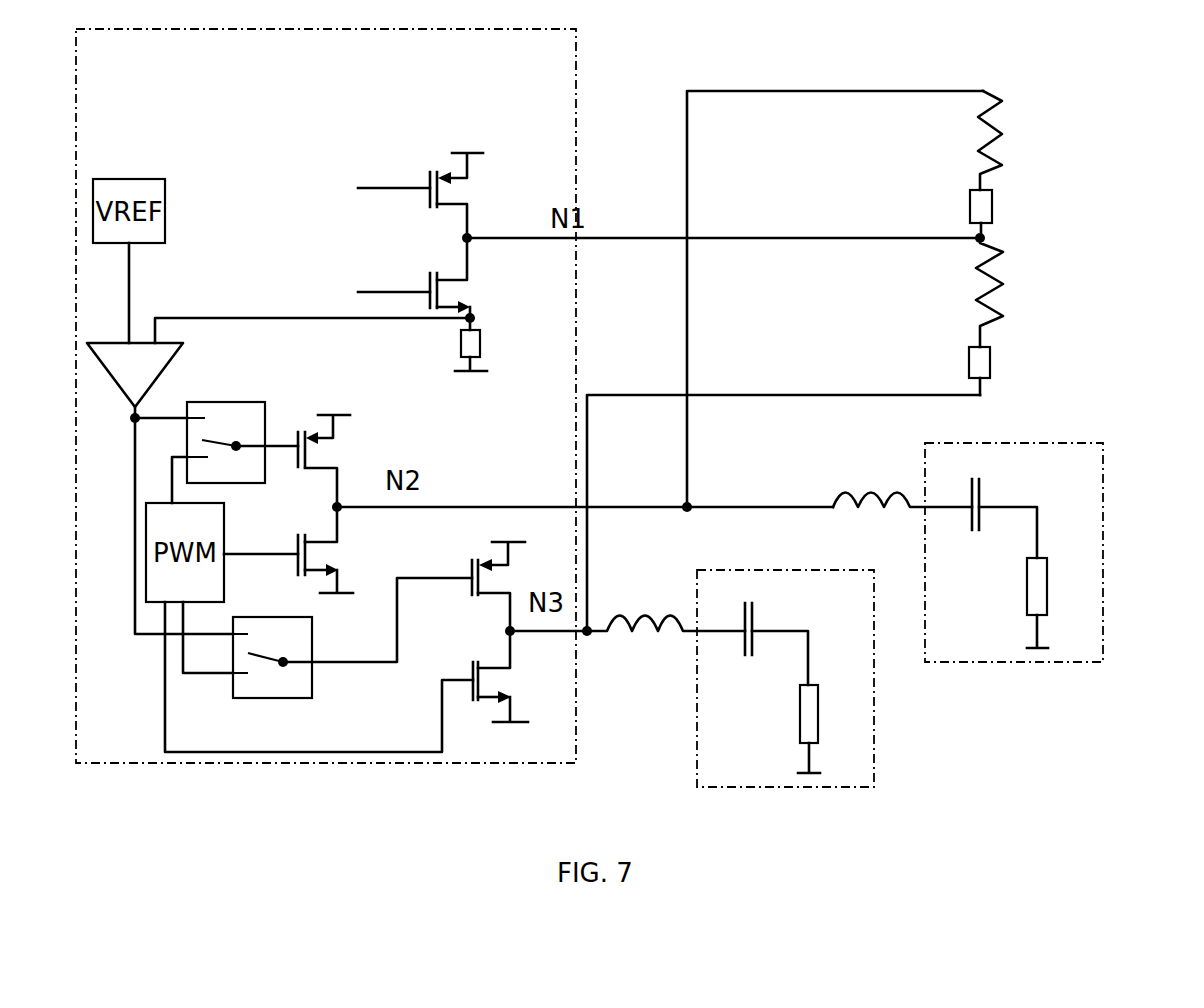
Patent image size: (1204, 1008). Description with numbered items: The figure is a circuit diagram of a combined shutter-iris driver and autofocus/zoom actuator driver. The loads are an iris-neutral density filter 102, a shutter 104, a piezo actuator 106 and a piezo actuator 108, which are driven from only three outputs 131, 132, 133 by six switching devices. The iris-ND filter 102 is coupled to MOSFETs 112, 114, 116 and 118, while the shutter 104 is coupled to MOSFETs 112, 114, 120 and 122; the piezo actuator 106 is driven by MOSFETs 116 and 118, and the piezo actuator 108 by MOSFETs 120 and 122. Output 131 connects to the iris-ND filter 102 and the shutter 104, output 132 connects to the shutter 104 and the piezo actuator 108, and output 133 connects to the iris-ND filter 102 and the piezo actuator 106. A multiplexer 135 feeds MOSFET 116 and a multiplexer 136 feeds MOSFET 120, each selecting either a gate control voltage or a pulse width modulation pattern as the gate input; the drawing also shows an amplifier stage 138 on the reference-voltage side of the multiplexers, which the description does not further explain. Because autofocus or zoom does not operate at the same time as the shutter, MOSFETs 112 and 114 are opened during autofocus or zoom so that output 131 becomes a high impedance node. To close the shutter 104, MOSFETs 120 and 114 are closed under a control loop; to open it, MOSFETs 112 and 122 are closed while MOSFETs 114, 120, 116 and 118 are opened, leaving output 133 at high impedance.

The iris-neutral density (ND) filter 102 is at (980, 140).
The shutter 104 is at (995, 293).
The piezo actuator 106 is at (1105, 547).
The piezo actuator 108 is at (880, 750).
The MOSFET 112 is at (427, 180).
The MOSFET 114 is at (427, 275).
The MOSFET 116 is at (297, 427).
The MOSFET 118 is at (300, 538).
The MOSFET 120 is at (468, 570).
The MOSFET 122 is at (472, 667).
The output 131 is at (673, 233).
The output 132 is at (672, 385).
The output 133 is at (673, 508).
The multiplexer 135 is at (260, 402).
The multiplexer 136 is at (262, 700).
The amplifier 138 is at (133, 340).